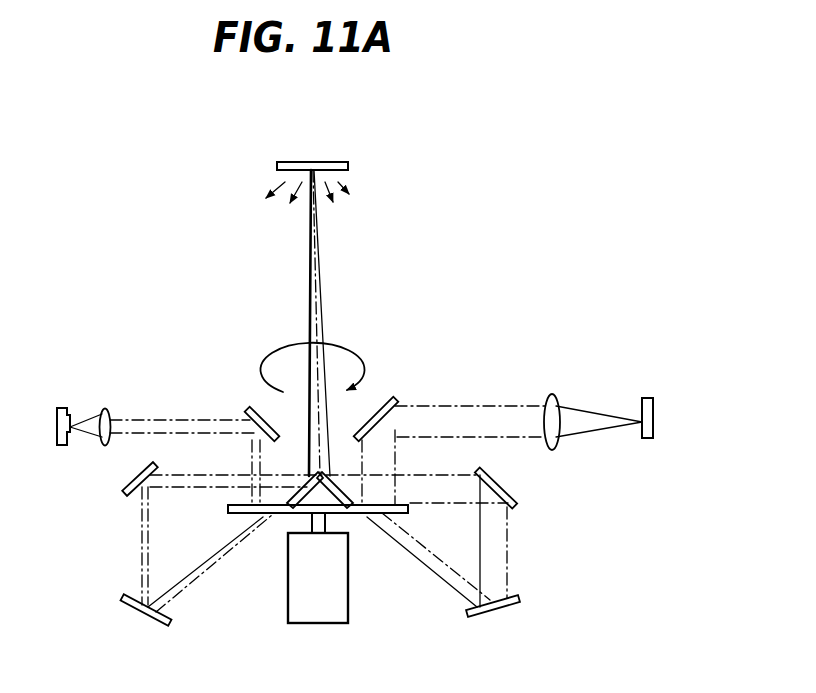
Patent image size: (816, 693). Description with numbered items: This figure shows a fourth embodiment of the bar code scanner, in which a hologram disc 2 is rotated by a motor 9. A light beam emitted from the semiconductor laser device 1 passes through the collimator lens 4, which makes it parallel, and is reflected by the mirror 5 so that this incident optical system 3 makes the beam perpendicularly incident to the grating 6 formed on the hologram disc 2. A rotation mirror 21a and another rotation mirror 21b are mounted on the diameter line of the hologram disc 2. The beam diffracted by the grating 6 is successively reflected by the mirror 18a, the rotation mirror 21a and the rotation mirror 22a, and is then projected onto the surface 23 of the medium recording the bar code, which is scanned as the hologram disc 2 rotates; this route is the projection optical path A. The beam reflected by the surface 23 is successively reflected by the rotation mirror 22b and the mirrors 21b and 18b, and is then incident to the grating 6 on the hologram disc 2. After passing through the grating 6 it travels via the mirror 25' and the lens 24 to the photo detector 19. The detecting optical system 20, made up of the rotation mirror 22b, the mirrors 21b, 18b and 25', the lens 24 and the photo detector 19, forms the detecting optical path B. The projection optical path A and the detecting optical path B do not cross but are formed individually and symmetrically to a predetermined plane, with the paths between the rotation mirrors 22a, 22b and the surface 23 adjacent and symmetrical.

The semiconductor laser device 1 is at (60, 406).
The hologram disc 2 is at (267, 516).
The incident optical system 3 is at (160, 407).
The collimator lens 4 is at (102, 408).
The mirror 5 is at (248, 410).
The grating 6 is at (233, 504).
The motor 9 is at (320, 598).
The mirror 18a is at (147, 620).
The mirror 18b is at (500, 612).
The photo detector 19 is at (647, 398).
The detecting optical system 20 is at (437, 390).
The rotation mirror 21a is at (127, 485).
The rotation mirror 21b is at (502, 483).
The rotation mirror 22a is at (297, 478).
The rotation mirror 22b is at (335, 473).
The surface of the medium recording the bar code 23 is at (323, 161).
The lens 24 is at (552, 393).
The mirror 25' is at (393, 417).
The projection optical path A is at (123, 535).
The detecting optical path B is at (532, 537).